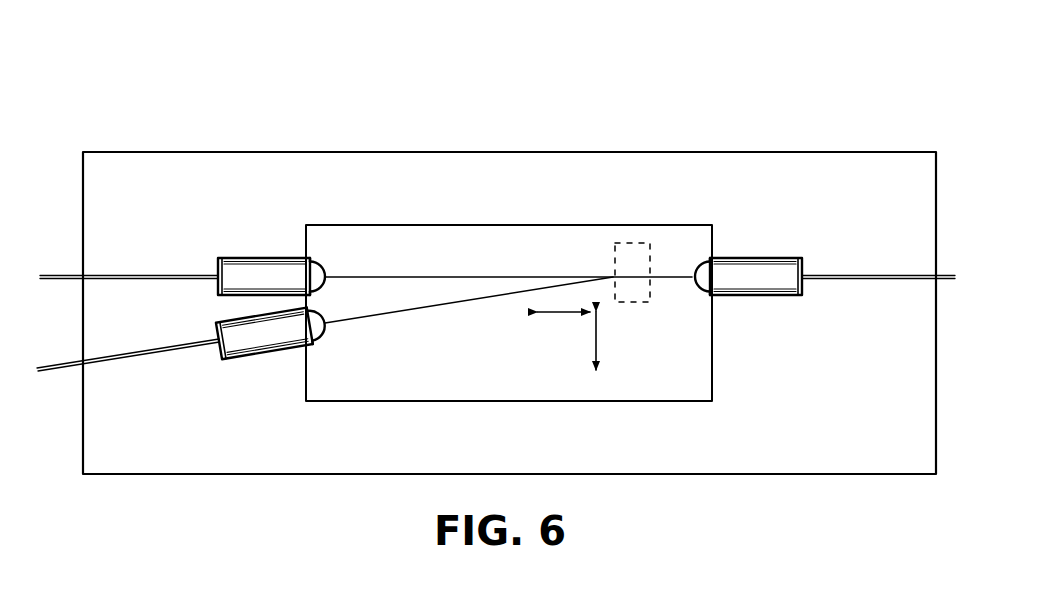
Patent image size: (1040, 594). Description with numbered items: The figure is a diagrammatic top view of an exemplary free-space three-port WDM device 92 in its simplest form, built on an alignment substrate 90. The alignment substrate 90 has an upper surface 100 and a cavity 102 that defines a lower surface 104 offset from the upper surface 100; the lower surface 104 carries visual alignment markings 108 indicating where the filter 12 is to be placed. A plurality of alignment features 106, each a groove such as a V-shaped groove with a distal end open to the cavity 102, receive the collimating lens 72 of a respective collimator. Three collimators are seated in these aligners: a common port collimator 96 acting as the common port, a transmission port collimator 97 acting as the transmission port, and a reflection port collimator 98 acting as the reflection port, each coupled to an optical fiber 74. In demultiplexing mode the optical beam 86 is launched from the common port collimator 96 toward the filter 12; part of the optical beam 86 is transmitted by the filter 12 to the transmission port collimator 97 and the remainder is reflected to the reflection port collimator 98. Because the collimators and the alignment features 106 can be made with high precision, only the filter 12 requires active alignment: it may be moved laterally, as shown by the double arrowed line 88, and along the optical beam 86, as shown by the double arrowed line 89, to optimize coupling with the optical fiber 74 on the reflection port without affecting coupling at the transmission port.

The filter 12 is at (612, 251).
The collimating lens 72 is at (229, 290).
The optical fiber 74 is at (113, 272).
The optical beam 86 is at (446, 276).
The double arrowed line 88 is at (600, 352).
The double arrowed line 89 is at (548, 313).
The alignment substrate 90 is at (712, 152).
The free-space three-port WDM device 92 is at (833, 86).
The common port collimator 96 is at (240, 256).
The transmission port collimator 97 is at (782, 256).
The reflection port collimator 98 is at (262, 366).
The upper surface 100 is at (664, 456).
The cavity 102 is at (714, 364).
The lower surface 104 is at (366, 391).
The alignment feature 106 is at (216, 271).
The visual alignment markings 108 is at (628, 241).